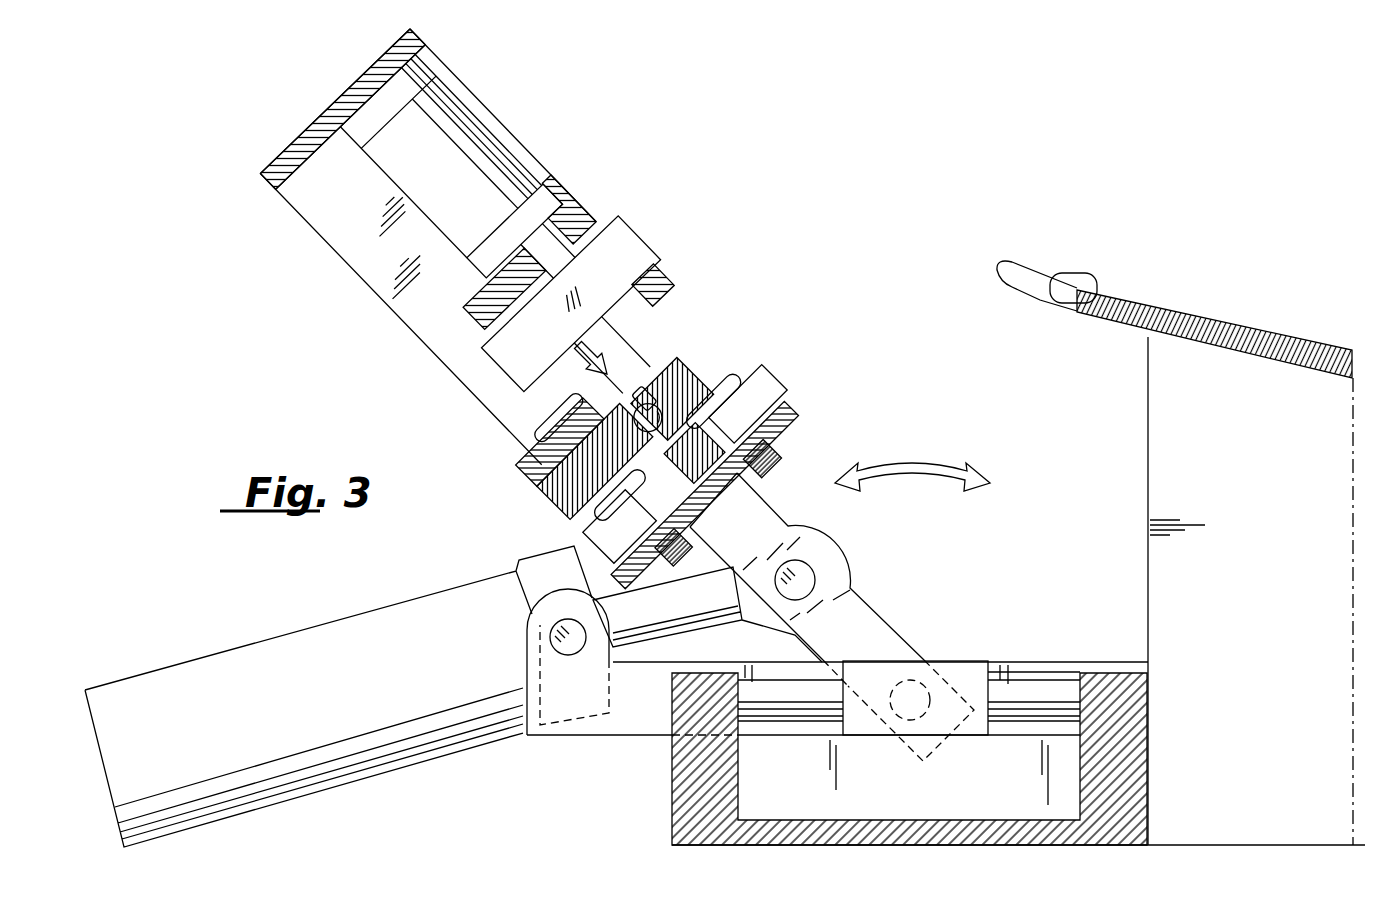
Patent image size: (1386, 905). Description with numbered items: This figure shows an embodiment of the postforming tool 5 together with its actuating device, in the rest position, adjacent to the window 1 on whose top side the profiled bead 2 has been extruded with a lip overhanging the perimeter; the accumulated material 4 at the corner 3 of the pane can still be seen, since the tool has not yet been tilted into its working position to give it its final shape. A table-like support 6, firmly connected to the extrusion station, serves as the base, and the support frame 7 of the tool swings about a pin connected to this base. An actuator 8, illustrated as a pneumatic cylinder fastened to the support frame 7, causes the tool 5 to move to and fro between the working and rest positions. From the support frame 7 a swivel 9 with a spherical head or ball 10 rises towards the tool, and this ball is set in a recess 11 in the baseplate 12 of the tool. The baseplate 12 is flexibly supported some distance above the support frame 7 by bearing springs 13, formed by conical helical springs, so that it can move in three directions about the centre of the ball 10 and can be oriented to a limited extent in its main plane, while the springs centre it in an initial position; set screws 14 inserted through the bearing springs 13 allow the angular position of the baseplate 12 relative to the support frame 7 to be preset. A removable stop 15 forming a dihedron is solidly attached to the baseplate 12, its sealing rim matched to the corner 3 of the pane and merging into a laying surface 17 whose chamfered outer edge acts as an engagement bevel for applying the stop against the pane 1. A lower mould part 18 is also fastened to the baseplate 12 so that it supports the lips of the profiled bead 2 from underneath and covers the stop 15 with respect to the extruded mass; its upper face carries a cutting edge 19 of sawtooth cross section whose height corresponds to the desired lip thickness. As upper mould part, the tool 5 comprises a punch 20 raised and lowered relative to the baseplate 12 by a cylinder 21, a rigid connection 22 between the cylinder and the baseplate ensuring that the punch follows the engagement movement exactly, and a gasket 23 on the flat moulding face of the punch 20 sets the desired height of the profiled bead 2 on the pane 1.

The window 1 is at (1185, 333).
The profiled bead 2 is at (1046, 272).
The corner 3 is at (1040, 308).
The accumulated material 4 is at (1072, 280).
The tool 5 is at (561, 309).
The support 6 is at (680, 803).
The support frame 7 is at (867, 622).
The actuator 8 is at (398, 669).
The swivel 9 is at (733, 477).
The ball 10 is at (637, 387).
The recess 11 is at (607, 403).
The baseplate 12 is at (543, 503).
The bearing springs 13 is at (730, 377).
The set screws 14 is at (783, 450).
The stop 15 is at (713, 318).
The laying surface 17 is at (677, 330).
The lower mould part 18 is at (540, 467).
The cutting edge 19 is at (583, 413).
The punch 20 is at (620, 225).
The cylinder 21 is at (458, 172).
The rigid connection 22 is at (453, 365).
The gasket 23 is at (663, 250).